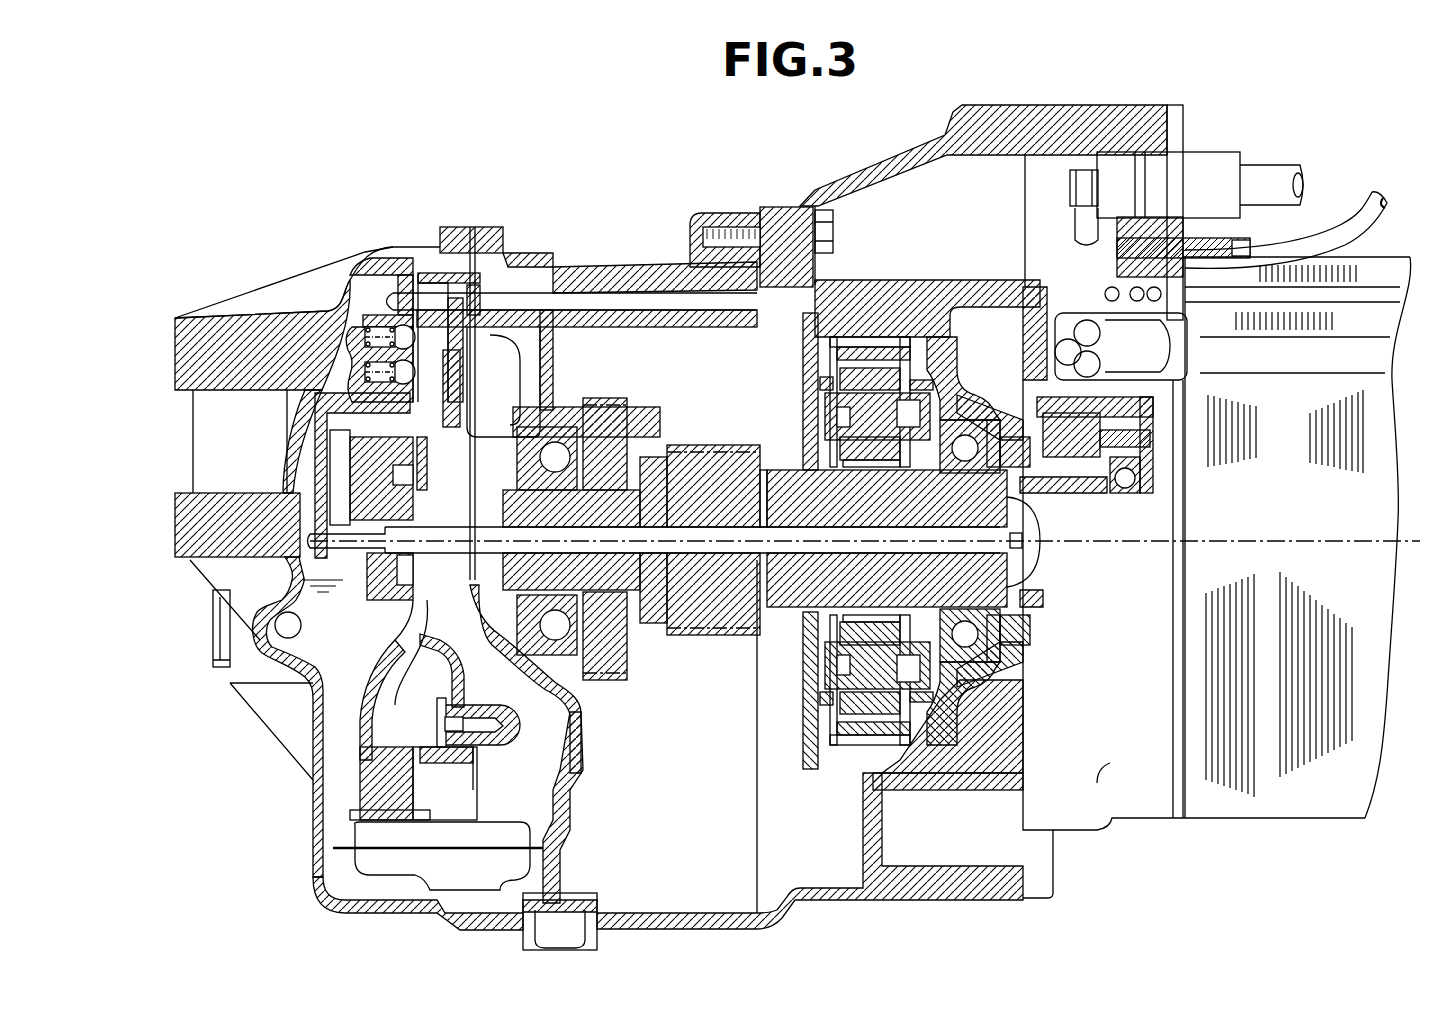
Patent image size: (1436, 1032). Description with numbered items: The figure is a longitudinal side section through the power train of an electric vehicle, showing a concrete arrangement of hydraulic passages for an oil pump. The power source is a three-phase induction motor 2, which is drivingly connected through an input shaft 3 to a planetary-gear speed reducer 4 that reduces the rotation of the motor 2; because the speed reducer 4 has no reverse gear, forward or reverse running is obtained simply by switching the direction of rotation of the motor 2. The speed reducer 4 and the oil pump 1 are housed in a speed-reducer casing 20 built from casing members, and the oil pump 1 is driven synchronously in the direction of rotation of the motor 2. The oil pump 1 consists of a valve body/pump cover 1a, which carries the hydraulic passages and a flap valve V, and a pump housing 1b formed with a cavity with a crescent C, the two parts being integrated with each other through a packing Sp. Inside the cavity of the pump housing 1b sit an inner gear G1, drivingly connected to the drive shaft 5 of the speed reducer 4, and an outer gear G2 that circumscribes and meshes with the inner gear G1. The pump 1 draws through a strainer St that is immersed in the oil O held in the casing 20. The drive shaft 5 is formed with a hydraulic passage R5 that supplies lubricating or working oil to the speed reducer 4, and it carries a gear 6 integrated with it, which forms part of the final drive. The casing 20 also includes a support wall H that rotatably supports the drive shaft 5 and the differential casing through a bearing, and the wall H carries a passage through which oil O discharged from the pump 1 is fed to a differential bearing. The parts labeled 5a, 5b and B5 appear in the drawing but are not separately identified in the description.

The oil pump 1 is at (413, 358).
The valve body/pump cover 1a is at (448, 277).
The pump housing 1b is at (406, 276).
The three-phase induction motor 2 is at (1393, 262).
The input shaft 3 is at (1073, 493).
The planetary-gear speed reducer 4 is at (808, 370).
The drive shaft 5 is at (634, 408).
The differential side gear 5a is at (765, 452).
The differential side gear 5b is at (640, 445).
The gear 6 is at (700, 450).
The speed-reducer casing 20 is at (893, 153).
The support wall H is at (549, 376).
The inner gear G1 is at (378, 583).
The outer gear G2 is at (370, 468).
The crescent C is at (400, 492).
The packing Sp is at (410, 610).
The hydraulic passage R5 is at (648, 545).
The oil O is at (710, 580).
The bearing B5 is at (527, 630).
The flap valve V is at (499, 745).
The strainer St is at (350, 830).